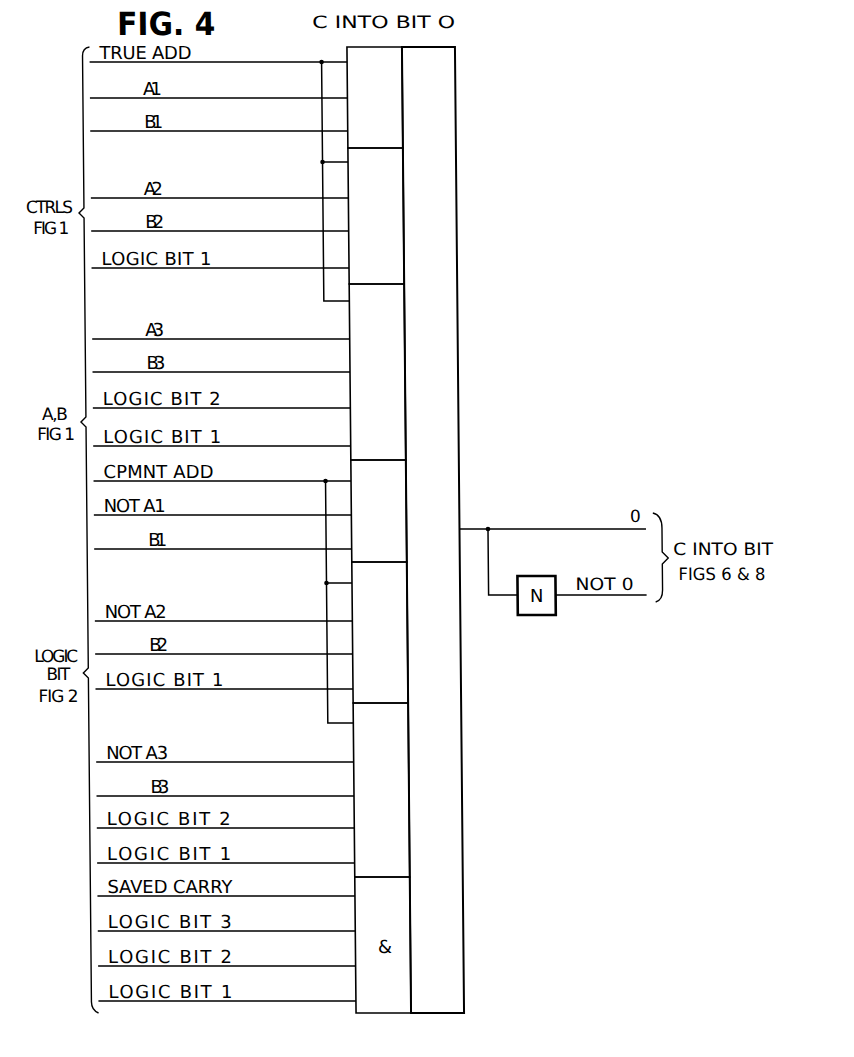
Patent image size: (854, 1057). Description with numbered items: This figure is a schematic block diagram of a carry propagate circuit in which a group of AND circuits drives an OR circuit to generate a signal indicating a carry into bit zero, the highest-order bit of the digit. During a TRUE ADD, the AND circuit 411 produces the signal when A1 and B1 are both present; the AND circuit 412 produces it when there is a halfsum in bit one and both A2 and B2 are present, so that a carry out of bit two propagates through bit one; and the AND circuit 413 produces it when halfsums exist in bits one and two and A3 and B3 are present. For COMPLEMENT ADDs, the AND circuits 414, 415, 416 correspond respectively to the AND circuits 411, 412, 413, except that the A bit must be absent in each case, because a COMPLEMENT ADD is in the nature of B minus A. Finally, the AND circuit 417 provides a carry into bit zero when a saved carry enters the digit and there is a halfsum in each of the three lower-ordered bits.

The AND circuit 411 is at (351, 104).
The AND circuit 412 is at (351, 205).
The AND circuit 413 is at (349, 315).
The AND circuit 414 is at (353, 490).
The AND circuit 415 is at (354, 594).
The AND circuit 416 is at (353, 735).
The AND circuit 417 is at (363, 1013).